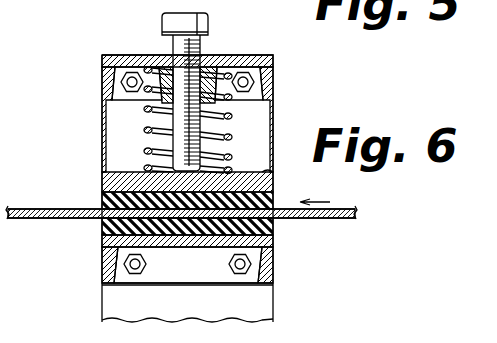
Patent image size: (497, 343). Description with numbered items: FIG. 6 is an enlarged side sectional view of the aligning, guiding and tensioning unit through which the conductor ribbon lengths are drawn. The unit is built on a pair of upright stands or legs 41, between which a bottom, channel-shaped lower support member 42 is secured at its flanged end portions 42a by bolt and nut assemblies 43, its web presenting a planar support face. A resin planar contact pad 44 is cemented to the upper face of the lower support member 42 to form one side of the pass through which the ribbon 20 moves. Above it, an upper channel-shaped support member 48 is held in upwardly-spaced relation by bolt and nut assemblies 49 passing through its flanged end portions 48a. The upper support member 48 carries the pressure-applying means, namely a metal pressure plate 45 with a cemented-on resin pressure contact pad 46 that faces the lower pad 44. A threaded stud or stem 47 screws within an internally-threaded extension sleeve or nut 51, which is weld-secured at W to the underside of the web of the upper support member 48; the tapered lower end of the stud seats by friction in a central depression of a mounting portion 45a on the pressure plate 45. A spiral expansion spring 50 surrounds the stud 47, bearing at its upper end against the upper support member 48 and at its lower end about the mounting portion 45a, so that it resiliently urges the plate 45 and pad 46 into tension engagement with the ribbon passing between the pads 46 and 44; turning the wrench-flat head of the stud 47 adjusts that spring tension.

The strip / sheet material 20 is at (302, 219).
The upright stands or legs 41 is at (274, 305).
The lower support metal member 42 is at (103, 259).
The flanged end portions 42a is at (145, 281).
The bolt and nut assemblies 43 is at (228, 272).
The planar contact pad 44 is at (103, 226).
The pressure plate 45 is at (103, 181).
The mounting portion 45a is at (274, 170).
The pressure contact pad 46 is at (103, 200).
The bolt, threaded stud or stem 47 is at (226, 138).
The upper support member 48 is at (274, 66).
The flanged end portions 48a is at (123, 96).
The bolt and nut assemblies 49 is at (103, 66).
The spiral expansion spring 50 is at (103, 130).
The extension sleeve or nut 51 is at (158, 55).
The weld W is at (214, 67).